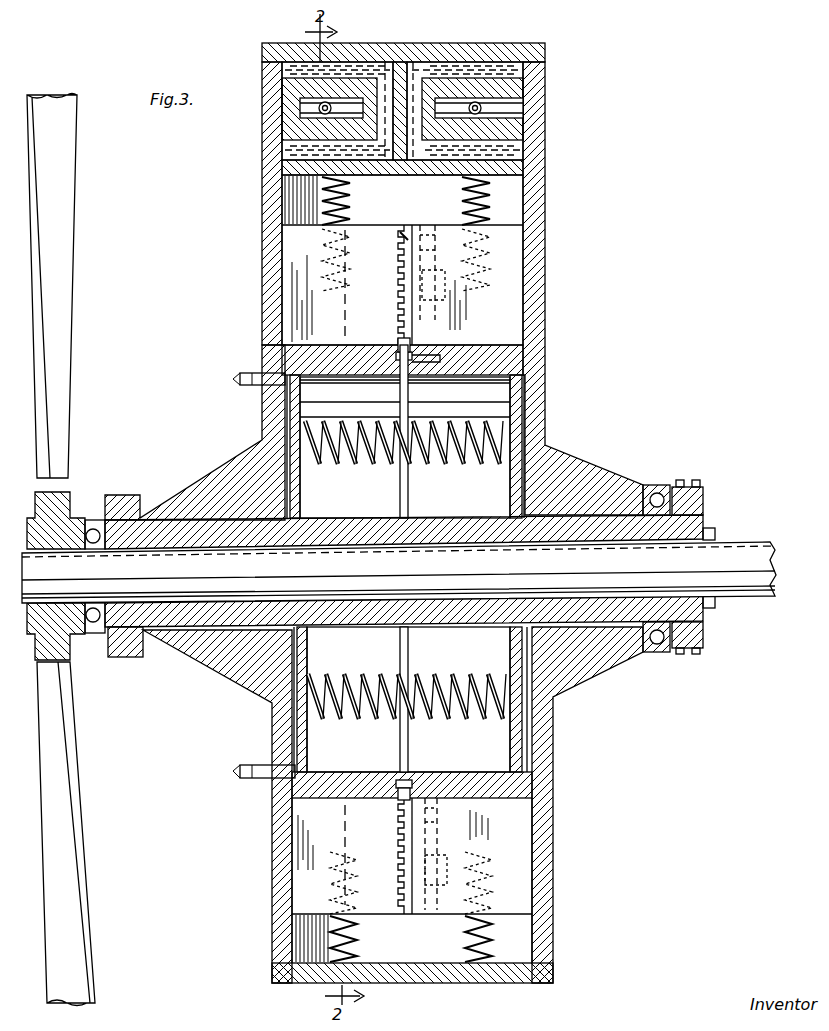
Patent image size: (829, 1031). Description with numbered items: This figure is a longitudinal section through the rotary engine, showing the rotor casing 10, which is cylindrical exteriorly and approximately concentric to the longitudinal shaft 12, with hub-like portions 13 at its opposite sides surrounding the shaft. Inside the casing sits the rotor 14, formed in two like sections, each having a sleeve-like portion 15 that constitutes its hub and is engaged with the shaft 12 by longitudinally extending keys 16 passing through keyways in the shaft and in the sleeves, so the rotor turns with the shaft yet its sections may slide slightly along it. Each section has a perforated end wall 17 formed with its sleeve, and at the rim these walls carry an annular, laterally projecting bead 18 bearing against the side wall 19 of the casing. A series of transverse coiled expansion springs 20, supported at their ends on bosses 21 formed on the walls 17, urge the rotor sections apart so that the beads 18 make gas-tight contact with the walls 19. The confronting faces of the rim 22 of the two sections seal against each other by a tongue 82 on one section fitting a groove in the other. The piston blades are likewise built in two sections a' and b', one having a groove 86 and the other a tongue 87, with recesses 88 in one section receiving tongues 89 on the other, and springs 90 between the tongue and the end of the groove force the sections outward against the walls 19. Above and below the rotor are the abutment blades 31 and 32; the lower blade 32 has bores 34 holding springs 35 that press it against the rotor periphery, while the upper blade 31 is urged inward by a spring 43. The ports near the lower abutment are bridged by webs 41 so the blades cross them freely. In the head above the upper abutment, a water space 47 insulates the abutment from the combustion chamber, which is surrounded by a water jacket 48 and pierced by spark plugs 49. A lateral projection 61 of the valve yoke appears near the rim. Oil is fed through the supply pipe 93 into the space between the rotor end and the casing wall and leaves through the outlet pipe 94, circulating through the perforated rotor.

The rotor casing 10 is at (492, 48).
The longitudinal shaft 12 is at (399, 572).
The hub-like portions 13 is at (192, 498).
The rotor 14 is at (545, 738).
The sleeve-like portion 15 is at (480, 520).
The longitudinally extending keys 16 is at (704, 535).
The end wall 17 is at (292, 400).
The annular flange or bead 18 is at (530, 347).
The side wall of the rotor casing 19 is at (262, 268).
The coiled expansion springs 20 is at (445, 464).
The bosses 21 is at (305, 438).
The rim 22 is at (458, 345).
The abutment blade 31 is at (510, 272).
The abutment blade 32 is at (525, 868).
The bores 34 is at (345, 912).
The springs 35 is at (360, 932).
The bridging webs 41 is at (505, 107).
The spring 43 is at (338, 200).
The water space 47 is at (290, 148).
The water jacket 48 is at (430, 62).
The spark plugs 49 is at (480, 105).
The lateral projection of yoke legs 61 is at (410, 352).
The tongue 82 is at (416, 558).
The groove 86 is at (444, 528).
The tongue 87 is at (430, 240).
The recesses 88 is at (412, 255).
The tongues 89 is at (400, 232).
The springs 90 is at (444, 577).
The oil supply pipe 93 is at (240, 380).
The outlet pipe 94 is at (250, 778).